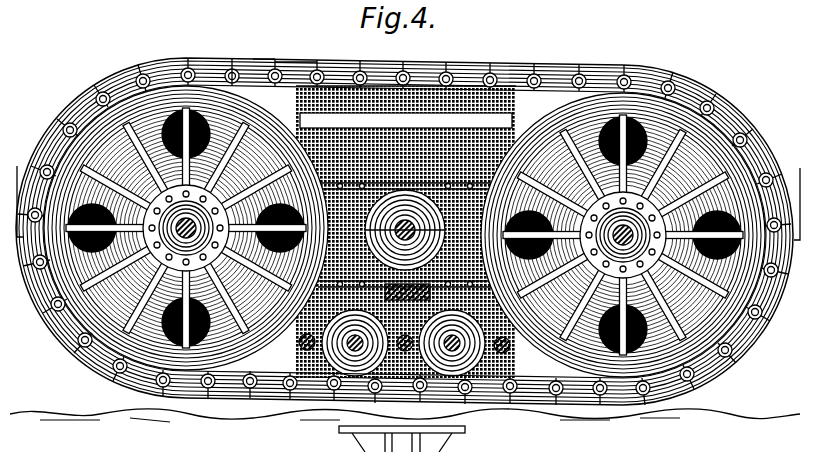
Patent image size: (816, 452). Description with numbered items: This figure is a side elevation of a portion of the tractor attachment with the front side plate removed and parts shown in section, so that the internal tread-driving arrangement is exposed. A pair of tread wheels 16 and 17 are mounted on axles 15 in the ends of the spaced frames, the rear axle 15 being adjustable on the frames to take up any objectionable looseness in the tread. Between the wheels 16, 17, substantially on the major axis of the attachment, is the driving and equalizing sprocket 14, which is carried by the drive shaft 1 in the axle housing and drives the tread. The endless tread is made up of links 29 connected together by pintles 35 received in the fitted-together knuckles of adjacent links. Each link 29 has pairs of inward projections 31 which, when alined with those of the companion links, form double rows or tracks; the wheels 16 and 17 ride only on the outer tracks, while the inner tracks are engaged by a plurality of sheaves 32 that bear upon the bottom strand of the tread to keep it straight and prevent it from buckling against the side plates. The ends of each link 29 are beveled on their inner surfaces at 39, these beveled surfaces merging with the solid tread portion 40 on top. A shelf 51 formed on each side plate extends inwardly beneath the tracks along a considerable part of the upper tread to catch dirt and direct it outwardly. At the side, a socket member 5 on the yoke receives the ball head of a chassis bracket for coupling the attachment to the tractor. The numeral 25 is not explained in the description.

The drive shaft 1 is at (406, 248).
The socket member 5 is at (403, 194).
The driving and equalizing sprocket 14 is at (398, 228).
The axle 15 is at (404, 231).
The wheel 16 is at (84, 114).
The wheel 17 is at (623, 235).
The wheel spoke 25 is at (717, 249).
The link 29 is at (190, 68).
The inward projection 31 is at (322, 86).
The sheave 32 is at (326, 400).
The pintle 35 is at (281, 70).
The beveled surface 39 is at (258, 70).
The tread portion 40 is at (212, 72).
The shelf 51 is at (496, 87).